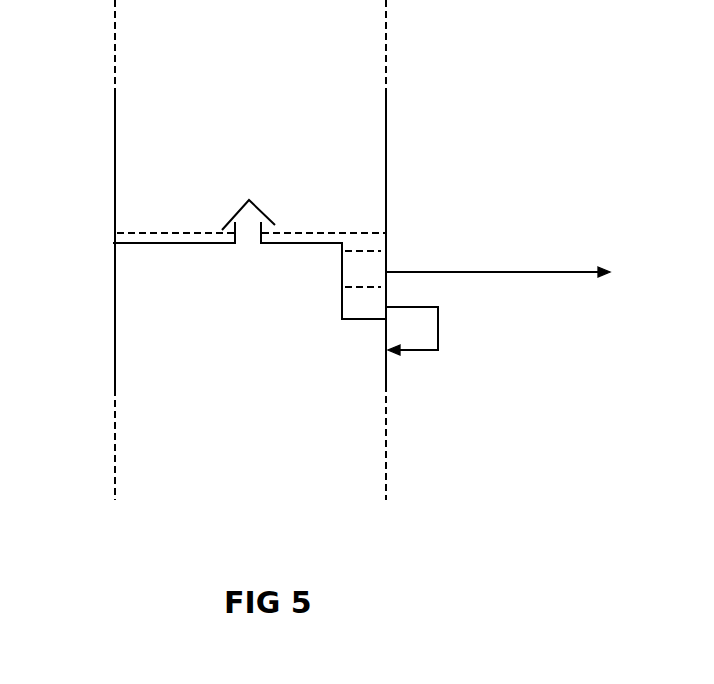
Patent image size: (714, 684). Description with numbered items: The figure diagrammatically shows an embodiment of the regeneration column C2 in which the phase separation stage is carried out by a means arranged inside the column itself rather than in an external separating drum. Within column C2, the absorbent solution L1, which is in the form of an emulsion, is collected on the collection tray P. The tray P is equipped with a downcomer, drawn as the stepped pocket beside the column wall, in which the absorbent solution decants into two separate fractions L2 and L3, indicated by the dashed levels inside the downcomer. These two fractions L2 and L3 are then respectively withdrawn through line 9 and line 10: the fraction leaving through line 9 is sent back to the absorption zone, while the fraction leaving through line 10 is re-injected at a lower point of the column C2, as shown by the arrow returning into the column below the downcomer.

The column C2 is at (115, 103).
The collection tray P is at (115, 243).
The absorbent solution in emulsion L1 is at (305, 241).
The first fraction L2 is at (342, 270).
The second fraction L3 is at (342, 304).
The line 9 is at (514, 271).
The line 10 is at (421, 354).